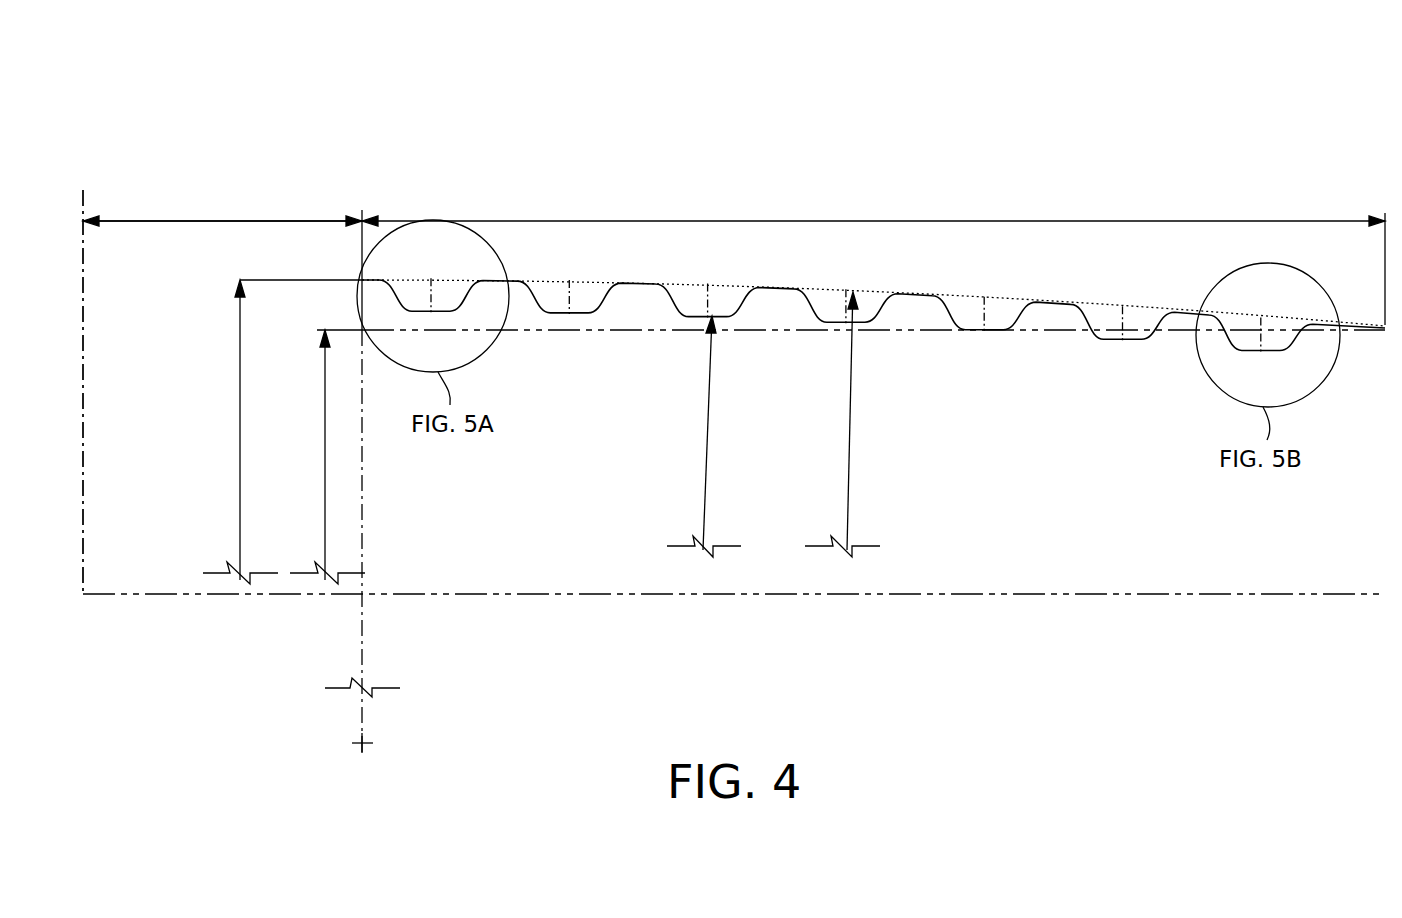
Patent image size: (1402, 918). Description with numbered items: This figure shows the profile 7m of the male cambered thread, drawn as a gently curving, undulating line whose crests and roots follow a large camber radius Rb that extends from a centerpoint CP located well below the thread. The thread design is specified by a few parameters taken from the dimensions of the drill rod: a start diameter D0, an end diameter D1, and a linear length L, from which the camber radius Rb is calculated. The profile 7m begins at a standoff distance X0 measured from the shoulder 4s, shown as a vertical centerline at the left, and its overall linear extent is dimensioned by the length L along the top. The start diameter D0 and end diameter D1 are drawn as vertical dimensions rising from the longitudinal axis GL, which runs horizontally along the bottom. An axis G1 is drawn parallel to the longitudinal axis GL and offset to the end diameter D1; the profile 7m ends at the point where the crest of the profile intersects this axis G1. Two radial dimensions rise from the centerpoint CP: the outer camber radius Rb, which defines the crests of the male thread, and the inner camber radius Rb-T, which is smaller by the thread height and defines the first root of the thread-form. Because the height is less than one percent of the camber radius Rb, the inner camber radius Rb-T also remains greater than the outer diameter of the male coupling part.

The profile 7m is at (208, 89).
The shoulder 4s is at (83, 392).
The standoff distance X0 is at (210, 222).
The length L is at (817, 222).
The start diameter D0 is at (240, 427).
The end diameter D1 is at (325, 450).
The inner camber radius Rb-T is at (705, 470).
The camber radius Rb is at (848, 455).
The axis G1 is at (1077, 332).
The longitudinal axis GL is at (1020, 596).
The centerpoint CP is at (362, 742).